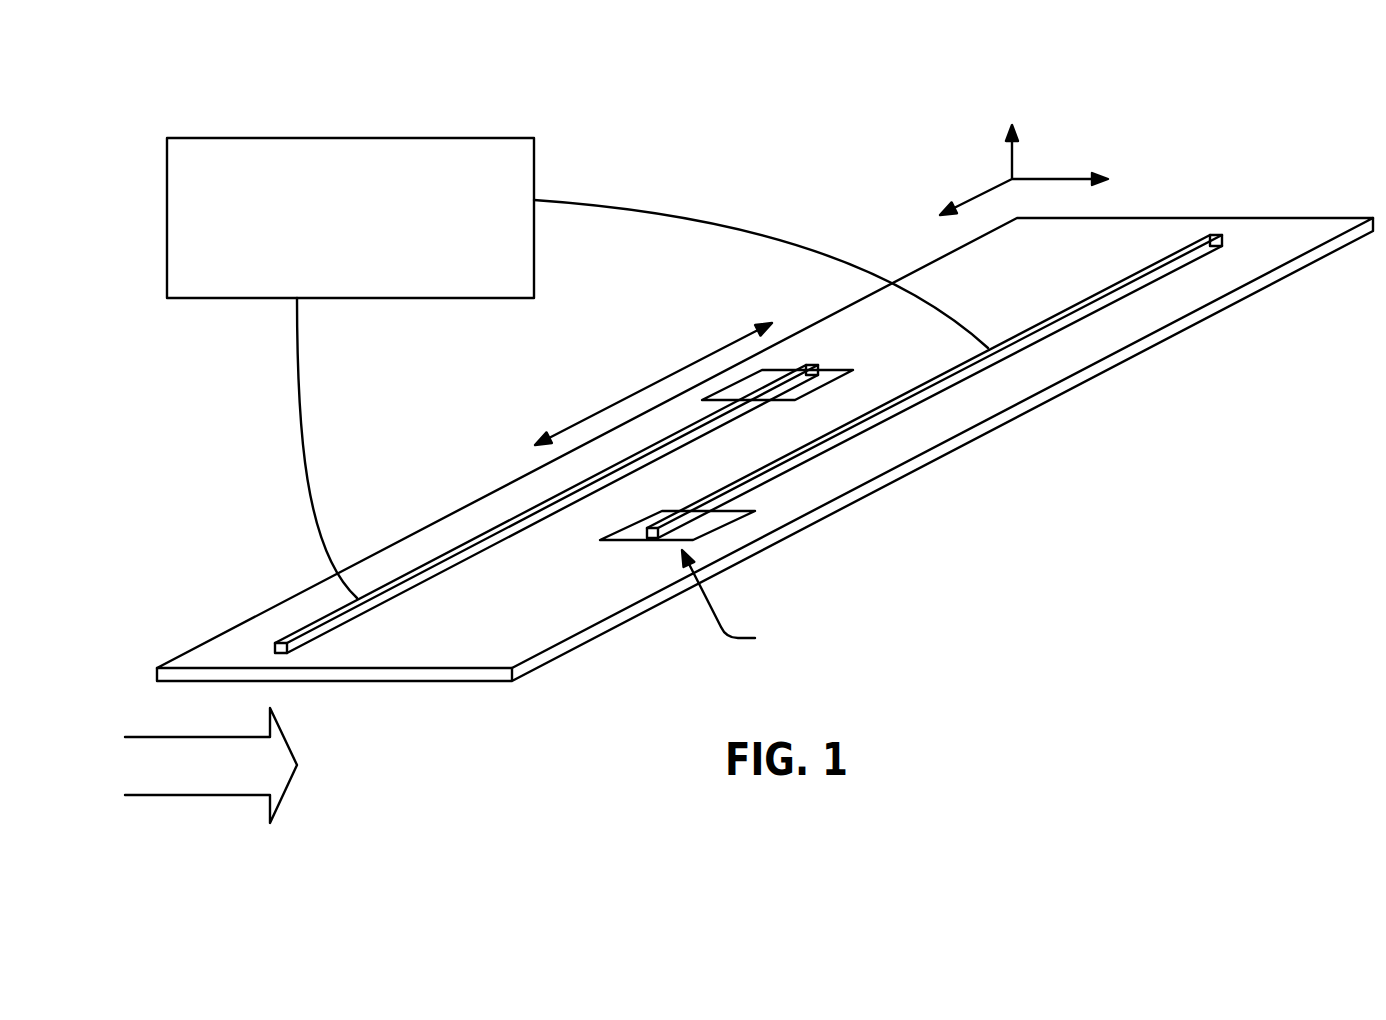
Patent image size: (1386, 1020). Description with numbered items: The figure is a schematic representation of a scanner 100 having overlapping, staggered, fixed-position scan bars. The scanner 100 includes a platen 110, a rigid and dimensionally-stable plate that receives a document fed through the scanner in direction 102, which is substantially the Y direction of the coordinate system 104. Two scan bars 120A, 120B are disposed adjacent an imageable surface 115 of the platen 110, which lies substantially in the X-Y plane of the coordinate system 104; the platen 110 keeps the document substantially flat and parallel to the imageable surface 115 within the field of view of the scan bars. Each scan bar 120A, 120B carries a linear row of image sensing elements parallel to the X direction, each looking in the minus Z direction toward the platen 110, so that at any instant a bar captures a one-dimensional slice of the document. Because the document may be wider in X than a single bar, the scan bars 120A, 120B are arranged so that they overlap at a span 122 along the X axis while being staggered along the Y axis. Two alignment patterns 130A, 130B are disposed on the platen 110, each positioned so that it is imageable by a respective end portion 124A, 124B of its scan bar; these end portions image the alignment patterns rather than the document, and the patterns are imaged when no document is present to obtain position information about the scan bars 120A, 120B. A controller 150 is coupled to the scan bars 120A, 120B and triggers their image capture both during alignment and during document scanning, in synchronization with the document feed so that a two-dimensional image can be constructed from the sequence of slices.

The scanner 100 is at (771, 409).
The direction 102 is at (283, 793).
The coordinate system 104 is at (1033, 179).
The platen 110 is at (771, 408).
The imageable surface 115 is at (1252, 257).
The scan bar 120A is at (410, 590).
The scan bar 120B is at (850, 443).
The span 122 is at (577, 423).
The end portion 124A is at (719, 314).
The end portion 124B is at (750, 600).
The alignment pattern 130A is at (832, 367).
The alignment pattern 130B is at (722, 530).
The controller 150 is at (427, 177).